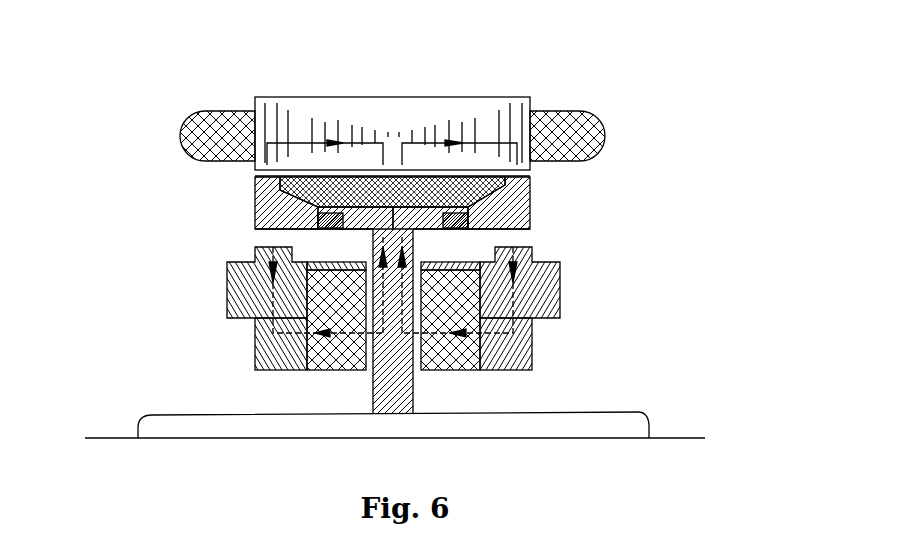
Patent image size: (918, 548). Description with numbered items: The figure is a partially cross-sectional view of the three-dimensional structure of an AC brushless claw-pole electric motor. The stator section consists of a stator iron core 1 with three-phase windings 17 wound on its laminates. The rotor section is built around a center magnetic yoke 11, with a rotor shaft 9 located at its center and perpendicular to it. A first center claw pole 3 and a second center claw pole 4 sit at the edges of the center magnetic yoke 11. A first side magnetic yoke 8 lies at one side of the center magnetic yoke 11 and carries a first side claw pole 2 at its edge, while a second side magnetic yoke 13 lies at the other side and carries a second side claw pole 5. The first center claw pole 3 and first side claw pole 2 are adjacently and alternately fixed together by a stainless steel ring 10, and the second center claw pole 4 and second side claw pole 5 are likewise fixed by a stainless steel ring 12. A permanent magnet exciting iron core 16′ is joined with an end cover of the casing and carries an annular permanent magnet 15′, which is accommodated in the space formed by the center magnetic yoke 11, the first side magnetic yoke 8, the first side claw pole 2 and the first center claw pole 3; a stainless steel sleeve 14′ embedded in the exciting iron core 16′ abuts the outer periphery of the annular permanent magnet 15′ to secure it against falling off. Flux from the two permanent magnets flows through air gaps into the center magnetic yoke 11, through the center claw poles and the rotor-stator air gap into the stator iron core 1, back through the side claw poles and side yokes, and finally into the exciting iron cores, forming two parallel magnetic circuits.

The stator iron core 1 is at (277, 127).
The first side claw pole 2 is at (388, 185).
The first center claw pole 3 is at (287, 185).
The second center claw pole 4 is at (500, 185).
The second side claw pole 5 is at (397, 185).
The first side magnetic yoke 8 is at (262, 228).
The rotor shaft 9 is at (170, 427).
The stainless steel ring 10 is at (262, 207).
The center magnetic yoke 11 is at (400, 398).
The stainless steel ring 12 is at (512, 197).
The second side magnetic yoke 13 is at (533, 223).
The stainless steel sleeve 14′ is at (300, 265).
The annular permanent magnet 15′ is at (322, 333).
The permanent magnet exciting iron core 16′ is at (263, 352).
The three-phase windings 17 is at (228, 143).